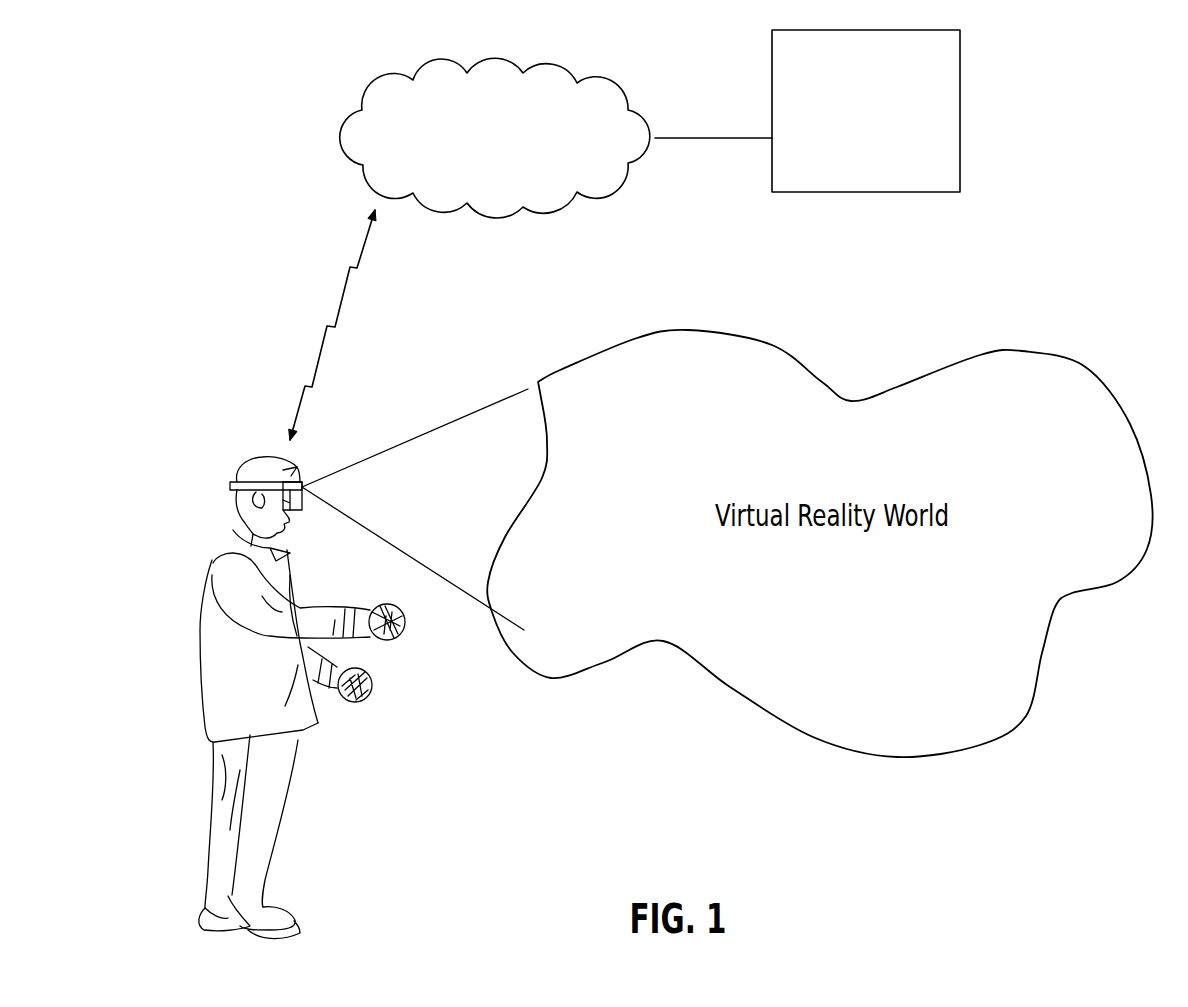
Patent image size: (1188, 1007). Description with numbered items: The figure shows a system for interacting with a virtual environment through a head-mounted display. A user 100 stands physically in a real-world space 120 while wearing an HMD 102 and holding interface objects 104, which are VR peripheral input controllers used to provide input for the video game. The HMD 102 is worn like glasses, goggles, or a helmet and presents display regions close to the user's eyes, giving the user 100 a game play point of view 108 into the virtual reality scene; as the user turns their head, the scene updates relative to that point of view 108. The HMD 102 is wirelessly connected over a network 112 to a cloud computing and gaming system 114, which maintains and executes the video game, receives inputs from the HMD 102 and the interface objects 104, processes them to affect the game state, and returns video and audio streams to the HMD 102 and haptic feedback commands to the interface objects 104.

The user 100 is at (213, 557).
The head-mounted display 102 is at (240, 482).
The interface objects 104 is at (405, 628).
The game play point of view 108 is at (385, 452).
The network 112 is at (548, 212).
The cloud computing and gaming system 114 is at (877, 192).
The real-world space 120 is at (419, 889).